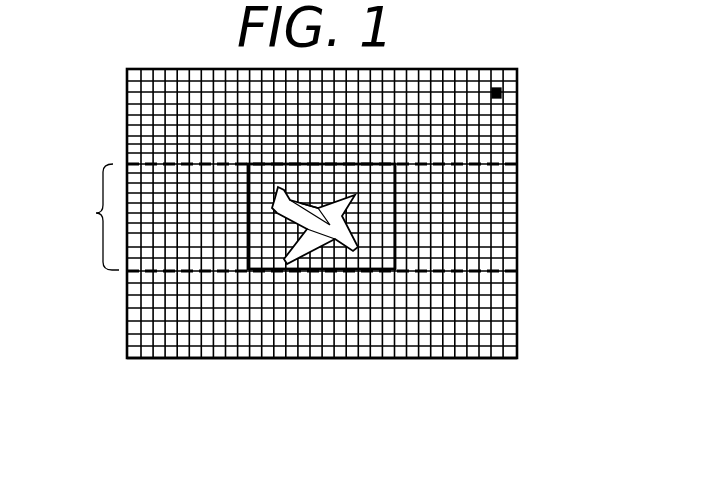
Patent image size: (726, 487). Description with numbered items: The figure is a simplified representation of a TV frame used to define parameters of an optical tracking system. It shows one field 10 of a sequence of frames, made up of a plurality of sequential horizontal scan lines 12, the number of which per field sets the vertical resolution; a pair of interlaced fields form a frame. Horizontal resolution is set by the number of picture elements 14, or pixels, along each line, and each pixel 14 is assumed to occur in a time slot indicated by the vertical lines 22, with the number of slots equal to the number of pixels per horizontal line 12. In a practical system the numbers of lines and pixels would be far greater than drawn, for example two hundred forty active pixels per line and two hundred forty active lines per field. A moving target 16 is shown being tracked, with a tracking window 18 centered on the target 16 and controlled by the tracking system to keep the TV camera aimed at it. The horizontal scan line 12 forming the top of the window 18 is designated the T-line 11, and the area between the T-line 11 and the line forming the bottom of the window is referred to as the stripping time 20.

The field 10 is at (127, 306).
The T-line 11 is at (514, 156).
The horizontal scan lines 12 is at (512, 266).
The picture elements 14 is at (503, 93).
The moving target 16 is at (292, 218).
The tracking window 18 is at (395, 231).
The stripping time 20 is at (97, 213).
The vertical lines 22 is at (210, 359).